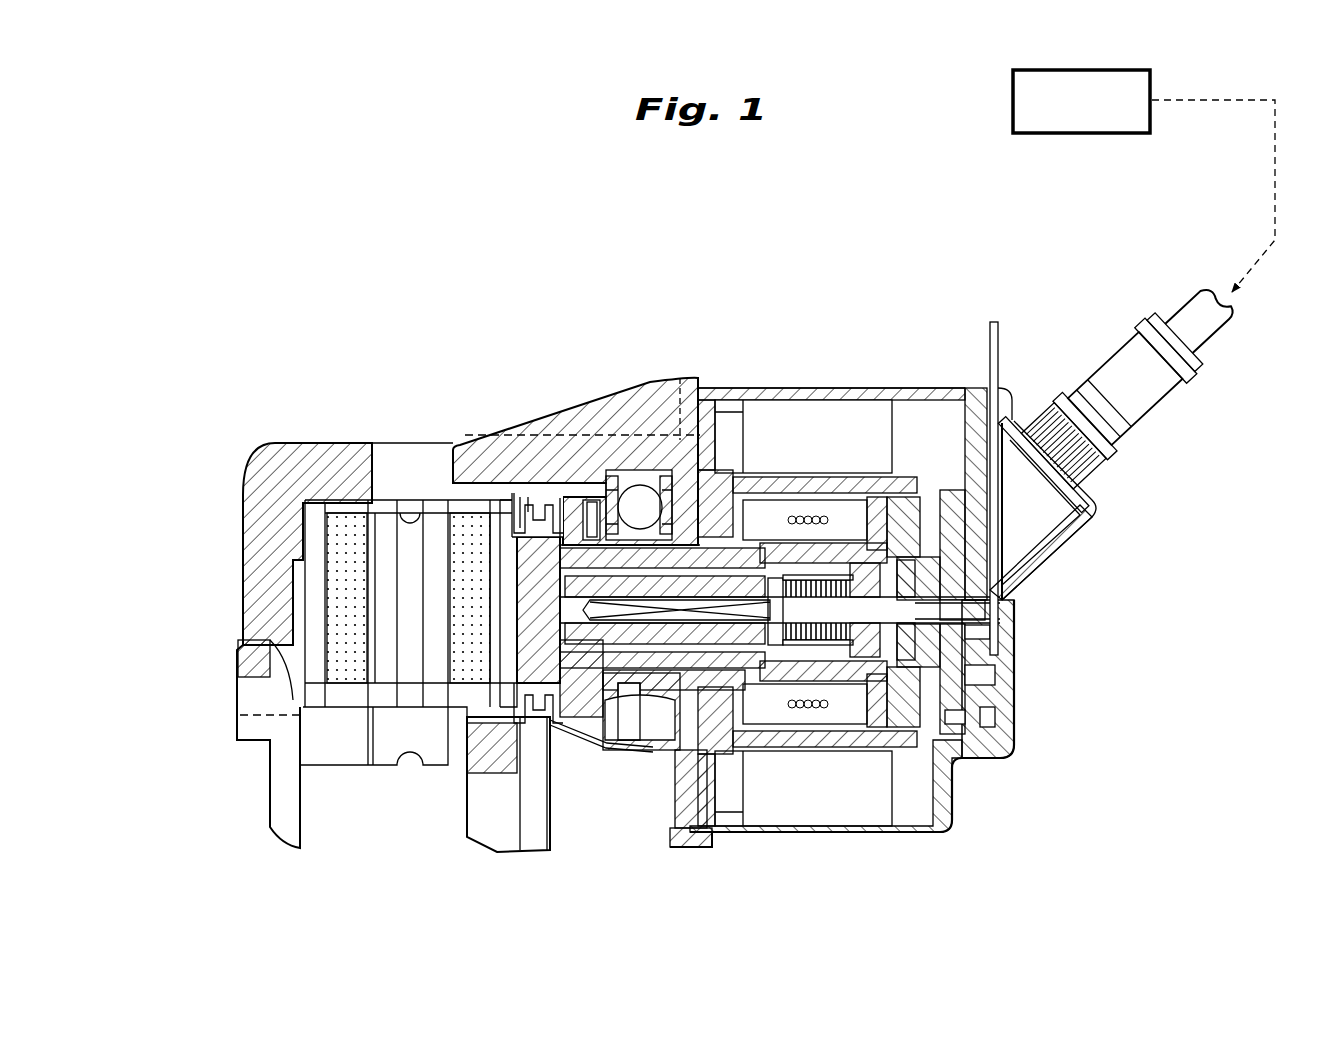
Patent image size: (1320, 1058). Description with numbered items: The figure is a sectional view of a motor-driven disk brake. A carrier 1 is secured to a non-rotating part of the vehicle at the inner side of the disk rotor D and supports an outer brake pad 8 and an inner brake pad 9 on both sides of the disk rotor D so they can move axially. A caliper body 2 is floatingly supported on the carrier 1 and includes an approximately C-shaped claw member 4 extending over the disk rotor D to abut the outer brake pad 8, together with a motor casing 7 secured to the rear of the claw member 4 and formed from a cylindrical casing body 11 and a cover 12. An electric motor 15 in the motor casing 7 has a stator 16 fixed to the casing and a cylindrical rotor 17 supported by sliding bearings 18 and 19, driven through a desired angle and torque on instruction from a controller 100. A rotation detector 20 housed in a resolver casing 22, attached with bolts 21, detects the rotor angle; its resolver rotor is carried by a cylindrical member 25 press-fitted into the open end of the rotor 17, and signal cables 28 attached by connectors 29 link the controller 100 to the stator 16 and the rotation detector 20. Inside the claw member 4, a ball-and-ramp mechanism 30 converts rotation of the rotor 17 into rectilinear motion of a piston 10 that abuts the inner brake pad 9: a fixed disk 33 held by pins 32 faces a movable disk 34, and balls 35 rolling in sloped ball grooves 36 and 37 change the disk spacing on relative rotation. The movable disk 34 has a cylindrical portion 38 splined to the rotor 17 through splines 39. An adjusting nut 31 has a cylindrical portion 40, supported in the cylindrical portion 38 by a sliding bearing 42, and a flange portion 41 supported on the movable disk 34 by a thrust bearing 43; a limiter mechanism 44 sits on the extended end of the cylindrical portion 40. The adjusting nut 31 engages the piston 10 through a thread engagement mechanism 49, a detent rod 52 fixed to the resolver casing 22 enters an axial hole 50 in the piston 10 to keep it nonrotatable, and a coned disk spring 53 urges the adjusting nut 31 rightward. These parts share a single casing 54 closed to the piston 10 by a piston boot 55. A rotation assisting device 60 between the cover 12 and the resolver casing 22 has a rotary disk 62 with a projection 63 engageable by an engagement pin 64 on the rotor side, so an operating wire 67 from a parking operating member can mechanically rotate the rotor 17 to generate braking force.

The carrier 1 is at (460, 777).
The caliper body 2 is at (412, 355).
The claw member 4 is at (262, 487).
The motor casing 7 is at (963, 823).
The outer brake pad 8 is at (343, 527).
The inner brake pad 9 is at (463, 537).
The piston 10 is at (505, 620).
The casing body 11 is at (772, 400).
The cover 12 is at (990, 747).
The electric motor 15 is at (840, 495).
The stator 16 is at (818, 400).
The rotor 17 is at (880, 493).
The sliding bearing 18 is at (913, 687).
The sliding bearing 19 is at (735, 690).
The rotation detector 20 is at (947, 518).
The bolts 21 is at (993, 717).
The resolver casing 22 is at (988, 527).
The cylindrical member 25 is at (918, 537).
The signal cables 28 is at (1188, 335).
The connectors 29 is at (1127, 410).
The ball-and-ramp mechanism 30 is at (562, 490).
The adjusting nut 31 is at (523, 517).
The pins 32 is at (660, 715).
The fixed disk 33 is at (645, 500).
The movable disk 34 is at (560, 503).
The balls 35 is at (633, 475).
The ball groove 36 is at (640, 745).
The ball groove 37 is at (590, 700).
The cylindrical portion 38 is at (680, 520).
The splines 39 is at (733, 523).
The cylindrical portion 40 is at (808, 683).
The flange portion 41 is at (557, 760).
The sliding bearing 42 is at (765, 680).
The thrust bearing 43 is at (578, 720).
The limiter mechanism 44 is at (830, 700).
The thread engagement mechanism 49 is at (487, 783).
The axial hole 50 is at (497, 487).
The detent rod 52 is at (940, 727).
The coned disk spring 53 is at (857, 673).
The casing 54 is at (520, 790).
The piston boot 55 is at (455, 673).
The rotation assisting device 60 is at (1017, 612).
The rotary disk 62 is at (1000, 633).
The projection 63 is at (1017, 697).
The engagement pin 64 is at (990, 687).
The operating wire 67 is at (997, 360).
The controller 100 is at (1088, 135).
The disk rotor D is at (383, 527).